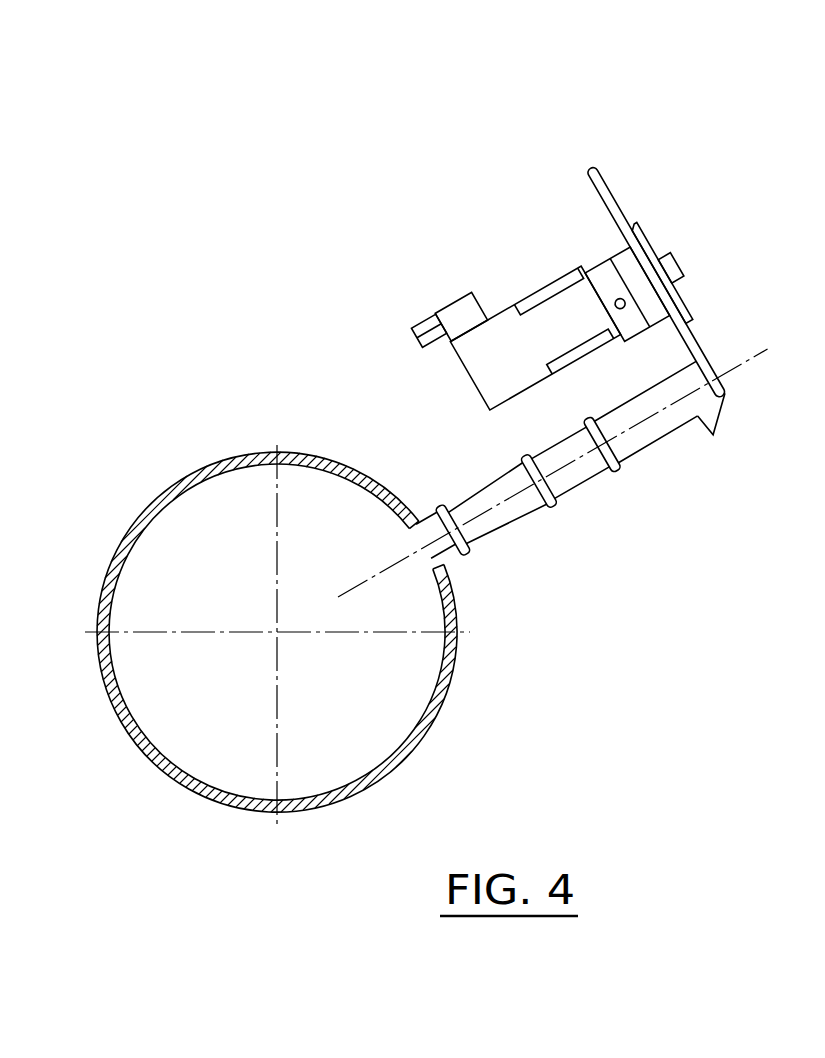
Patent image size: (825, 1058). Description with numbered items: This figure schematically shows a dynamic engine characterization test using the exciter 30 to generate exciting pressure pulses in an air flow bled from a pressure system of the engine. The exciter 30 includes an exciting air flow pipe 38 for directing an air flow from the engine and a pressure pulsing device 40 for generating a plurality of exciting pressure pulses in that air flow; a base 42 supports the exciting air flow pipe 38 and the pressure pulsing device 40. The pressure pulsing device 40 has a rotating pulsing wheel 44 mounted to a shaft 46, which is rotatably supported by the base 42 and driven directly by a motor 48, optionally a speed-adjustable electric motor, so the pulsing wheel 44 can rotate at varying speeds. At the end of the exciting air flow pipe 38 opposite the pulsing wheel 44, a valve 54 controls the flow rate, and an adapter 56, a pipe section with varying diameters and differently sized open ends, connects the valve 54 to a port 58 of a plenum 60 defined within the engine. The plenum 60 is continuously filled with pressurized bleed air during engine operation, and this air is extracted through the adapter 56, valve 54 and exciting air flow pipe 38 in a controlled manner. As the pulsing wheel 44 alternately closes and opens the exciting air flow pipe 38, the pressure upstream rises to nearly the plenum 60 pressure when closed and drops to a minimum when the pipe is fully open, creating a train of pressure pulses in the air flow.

The exciter 30 is at (562, 147).
The exciting air flow pipe 38 is at (657, 440).
The pressure pulsing device 40 is at (549, 272).
The base 42 is at (725, 410).
The pulsing wheel 44 is at (603, 172).
The shaft 46 is at (675, 262).
The motor 48 is at (467, 388).
The valve 54 is at (572, 490).
The adapter 56 is at (500, 525).
The port 58 is at (462, 562).
The plenum 60 is at (390, 730).